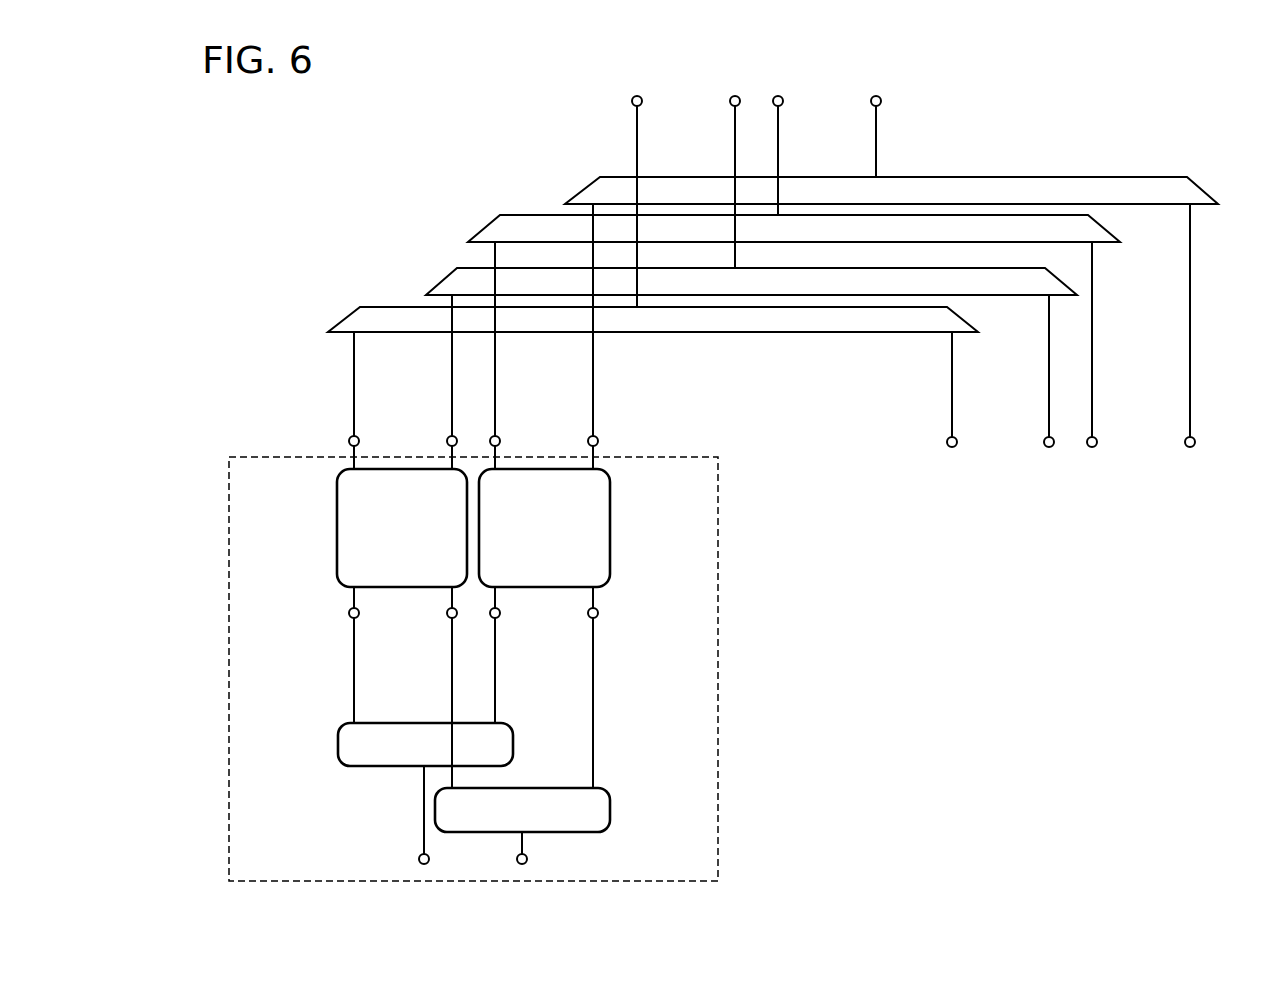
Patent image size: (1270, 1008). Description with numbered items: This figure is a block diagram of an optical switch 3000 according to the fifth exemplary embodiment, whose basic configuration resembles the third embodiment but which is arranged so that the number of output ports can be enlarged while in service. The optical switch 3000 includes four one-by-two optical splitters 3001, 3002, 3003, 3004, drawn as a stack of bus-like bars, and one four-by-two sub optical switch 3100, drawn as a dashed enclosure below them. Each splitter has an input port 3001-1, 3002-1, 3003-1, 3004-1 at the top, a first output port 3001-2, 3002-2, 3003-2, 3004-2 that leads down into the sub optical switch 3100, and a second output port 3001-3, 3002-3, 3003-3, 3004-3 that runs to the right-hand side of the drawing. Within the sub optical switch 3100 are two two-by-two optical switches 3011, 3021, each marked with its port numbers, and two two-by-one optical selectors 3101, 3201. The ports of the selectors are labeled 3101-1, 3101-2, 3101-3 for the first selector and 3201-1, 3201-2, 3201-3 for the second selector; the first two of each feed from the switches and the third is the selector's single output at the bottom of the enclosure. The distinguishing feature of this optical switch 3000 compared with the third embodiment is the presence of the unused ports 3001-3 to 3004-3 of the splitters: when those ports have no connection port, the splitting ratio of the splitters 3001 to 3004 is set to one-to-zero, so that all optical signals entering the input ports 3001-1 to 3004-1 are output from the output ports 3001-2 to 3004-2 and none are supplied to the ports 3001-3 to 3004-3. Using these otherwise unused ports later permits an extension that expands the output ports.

The optical switch 3000 is at (1090, 110).
The 1×2 optical splitter 3001 is at (360, 308).
The 1×2 optical splitter 3002 is at (456, 270).
The 1×2 optical splitter 3003 is at (499, 216).
The 1×2 optical splitter 3004 is at (597, 178).
The input port 3001-1 is at (633, 151).
The input port 3002-1 is at (732, 151).
The input port 3003-1 is at (804, 151).
The input port 3004-1 is at (902, 151).
The output port 3001-2 is at (385, 425).
The output port 3002-2 is at (452, 380).
The output port 3003-2 is at (526, 425).
The output port 3004-2 is at (593, 380).
The unused port 3001-3 is at (983, 425).
The unused port 3002-3 is at (1049, 380).
The unused port 3003-3 is at (1123, 425).
The unused port 3004-3 is at (1190, 380).
The 2×2 optical switch 3011 is at (337, 532).
The 2×2 optical switch 3021 is at (611, 522).
The 4×2 sub optical switch 3100 is at (719, 519).
The 2×1 optical selector 3101 is at (337, 750).
The 2×1 optical selector 3201 is at (612, 803).
The first connection bar terminal 3101-1 is at (385, 701).
The first connection bar terminal 3101-2 is at (526, 701).
The first connection bar output terminal 3101-3 is at (418, 860).
The second connection bar terminal 3201-1 is at (452, 657).
The second connection bar terminal 3201-2 is at (593, 657).
The second connection bar output terminal 3201-3 is at (528, 859).